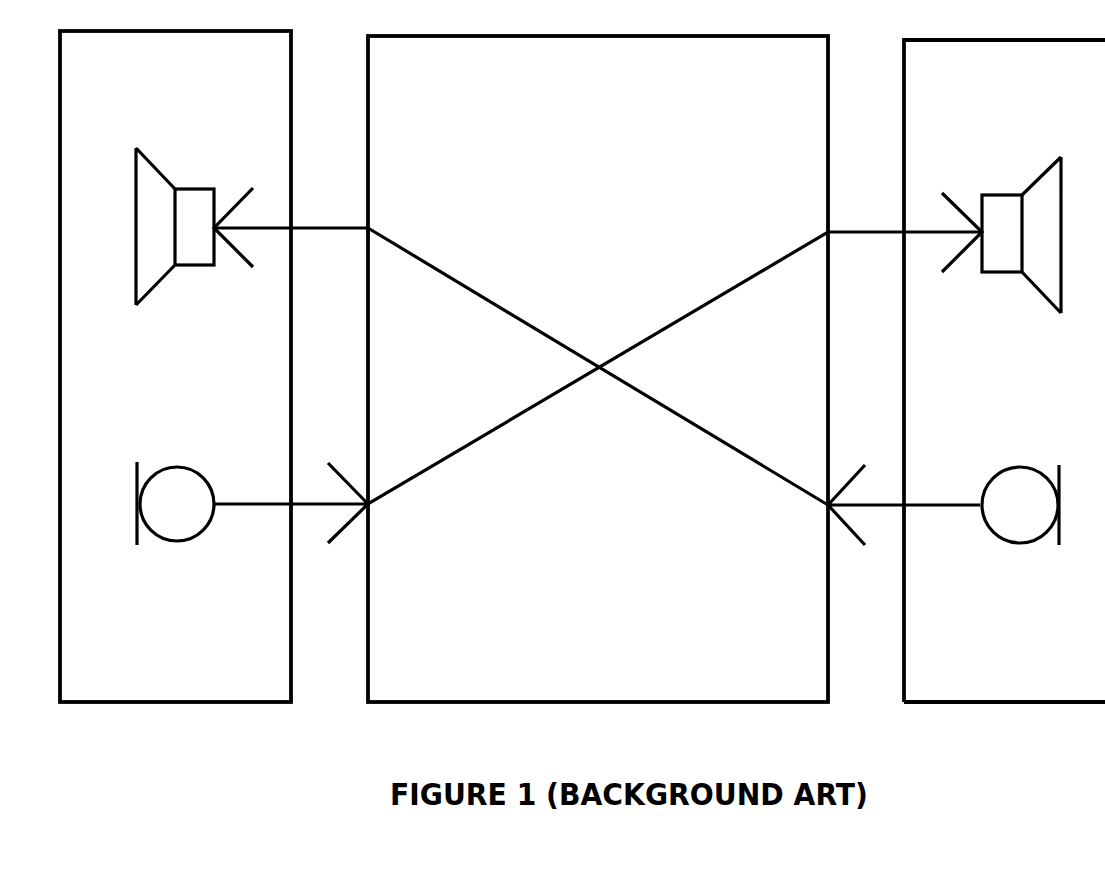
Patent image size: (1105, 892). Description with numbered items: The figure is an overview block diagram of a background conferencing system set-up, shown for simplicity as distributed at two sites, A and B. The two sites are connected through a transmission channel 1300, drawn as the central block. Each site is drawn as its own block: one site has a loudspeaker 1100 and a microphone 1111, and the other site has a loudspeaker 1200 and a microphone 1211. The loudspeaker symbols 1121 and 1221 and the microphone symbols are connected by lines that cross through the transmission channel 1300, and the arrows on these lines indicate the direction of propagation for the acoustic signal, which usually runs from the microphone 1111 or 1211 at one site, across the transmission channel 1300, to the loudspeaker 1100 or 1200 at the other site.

The loudspeaker 1100 is at (175, 366).
The loudspeaker 1200 is at (1004, 371).
The transmission channel 1300 is at (598, 369).
The microphone 1111 is at (175, 520).
The speaker of first terminal 1121 is at (194, 246).
The microphone 1211 is at (1020, 522).
The speaker of second terminal 1221 is at (1001, 253).